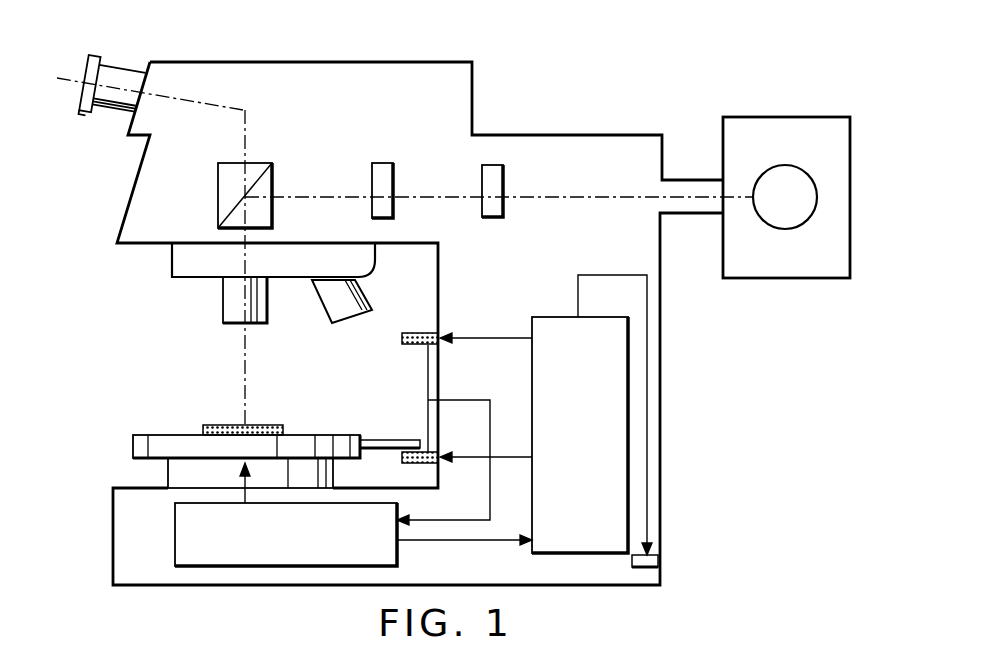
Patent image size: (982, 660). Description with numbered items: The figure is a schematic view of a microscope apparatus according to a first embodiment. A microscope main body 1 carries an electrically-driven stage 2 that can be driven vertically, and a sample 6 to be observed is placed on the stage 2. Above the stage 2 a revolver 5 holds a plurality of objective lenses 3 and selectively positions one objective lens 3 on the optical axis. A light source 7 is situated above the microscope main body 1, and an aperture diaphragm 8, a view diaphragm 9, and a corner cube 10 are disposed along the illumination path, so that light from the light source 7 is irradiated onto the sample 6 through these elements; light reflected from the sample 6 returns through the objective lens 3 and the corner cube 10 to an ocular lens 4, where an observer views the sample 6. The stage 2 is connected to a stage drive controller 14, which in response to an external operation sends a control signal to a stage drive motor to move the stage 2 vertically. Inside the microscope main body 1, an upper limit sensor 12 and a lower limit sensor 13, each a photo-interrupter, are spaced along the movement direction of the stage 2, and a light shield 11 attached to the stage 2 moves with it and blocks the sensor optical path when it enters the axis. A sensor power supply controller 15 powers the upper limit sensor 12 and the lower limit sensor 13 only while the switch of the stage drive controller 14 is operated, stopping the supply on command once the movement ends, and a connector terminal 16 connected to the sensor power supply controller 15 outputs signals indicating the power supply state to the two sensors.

The microscope main body 1 is at (663, 352).
The electrically-driven stage 2 is at (158, 433).
The objective lens 3 is at (257, 325).
The ocular lens 4 is at (125, 63).
The revolver 5 is at (182, 283).
The sample 6 is at (218, 425).
The light source 7 is at (790, 166).
The aperture diaphragm 8 is at (490, 166).
The view diaphragm 9 is at (378, 164).
The corner cube 10 is at (218, 172).
The light shield 11 is at (390, 438).
The upper limit sensor 12 is at (412, 331).
The lower limit sensor 13 is at (406, 466).
The stage drive controller 14 is at (400, 560).
The sensor power supply controller 15 is at (540, 317).
The connector terminal 16 is at (662, 560).